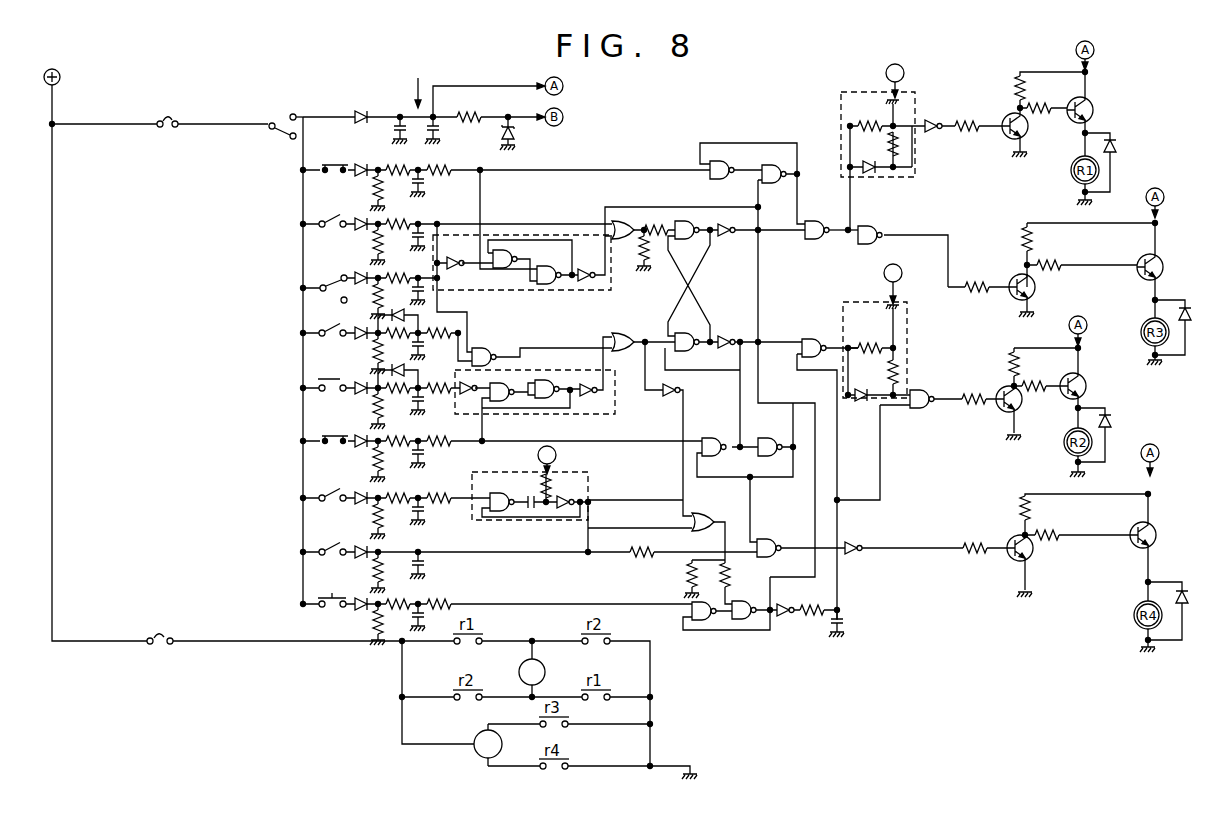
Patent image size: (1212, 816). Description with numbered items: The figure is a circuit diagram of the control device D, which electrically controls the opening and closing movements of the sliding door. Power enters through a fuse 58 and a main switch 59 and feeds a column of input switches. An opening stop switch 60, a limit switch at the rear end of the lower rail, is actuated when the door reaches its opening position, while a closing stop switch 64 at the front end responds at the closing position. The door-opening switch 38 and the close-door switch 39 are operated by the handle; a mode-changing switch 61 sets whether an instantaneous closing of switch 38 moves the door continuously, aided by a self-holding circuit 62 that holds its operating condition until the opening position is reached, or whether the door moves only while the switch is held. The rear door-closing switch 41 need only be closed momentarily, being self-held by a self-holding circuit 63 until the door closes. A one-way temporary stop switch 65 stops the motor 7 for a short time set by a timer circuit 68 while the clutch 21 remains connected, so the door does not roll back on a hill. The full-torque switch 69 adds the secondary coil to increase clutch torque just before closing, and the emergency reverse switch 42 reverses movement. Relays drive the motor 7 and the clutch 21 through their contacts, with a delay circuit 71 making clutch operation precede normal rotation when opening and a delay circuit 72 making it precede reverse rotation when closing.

The motor 7 is at (545, 671).
The clutch 21 is at (476, 737).
The door-opening switch 38 is at (303, 211).
The close-door switch 39 is at (303, 319).
The rear door-closing switch 41 is at (303, 370).
The emergency reverse switch 42 is at (301, 575).
The fuse 58 is at (167, 122).
The main switch 59 is at (275, 123).
The opening stop switch 60 is at (303, 156).
The mode-changing switch 61 is at (303, 268).
The self-holding circuit 62 is at (500, 235).
The self-holding circuit 63 is at (538, 370).
The closing stop switch 64 is at (303, 427).
The temporary stop switch 65 is at (303, 483).
The timer circuit 68 is at (502, 522).
The full-torque switch 69 is at (303, 537).
The delay circuit 71 is at (874, 178).
The delay circuit 72 is at (909, 359).
The control device D is at (312, 70).